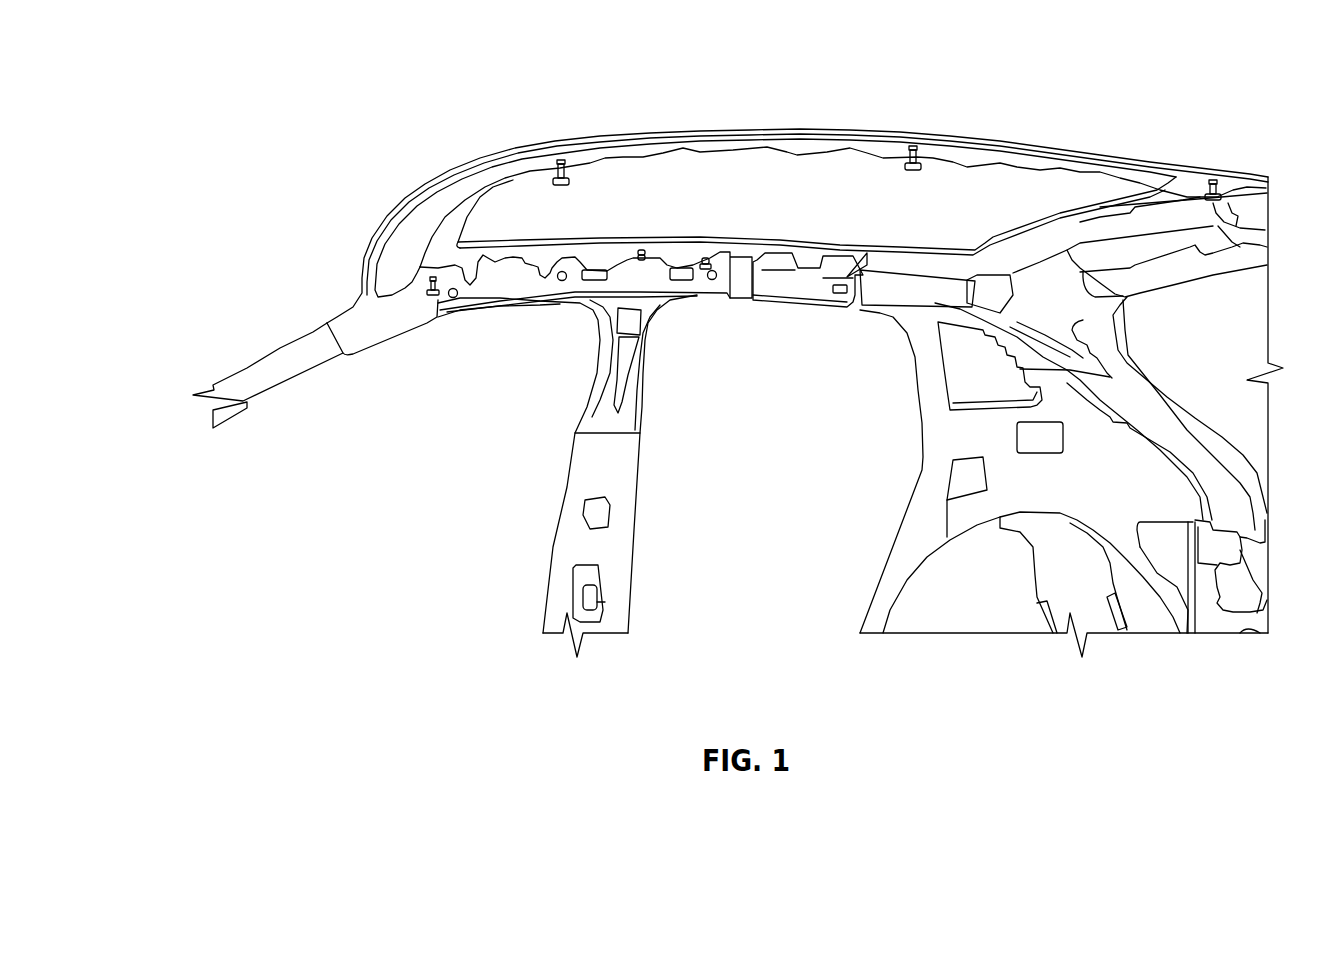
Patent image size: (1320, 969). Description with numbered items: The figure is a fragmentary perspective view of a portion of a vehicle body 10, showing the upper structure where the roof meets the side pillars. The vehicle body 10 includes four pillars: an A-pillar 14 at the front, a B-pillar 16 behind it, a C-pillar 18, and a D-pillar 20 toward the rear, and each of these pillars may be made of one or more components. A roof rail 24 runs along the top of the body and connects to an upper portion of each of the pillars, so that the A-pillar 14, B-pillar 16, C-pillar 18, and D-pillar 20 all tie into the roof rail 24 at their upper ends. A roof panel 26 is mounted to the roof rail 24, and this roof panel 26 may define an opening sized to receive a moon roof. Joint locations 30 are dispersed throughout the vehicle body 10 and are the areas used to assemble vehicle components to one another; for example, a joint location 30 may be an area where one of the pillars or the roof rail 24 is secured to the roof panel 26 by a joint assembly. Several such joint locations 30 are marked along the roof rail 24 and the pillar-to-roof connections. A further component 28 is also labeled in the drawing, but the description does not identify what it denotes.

The vehicle body 10 is at (1172, 80).
The A-pillar 14 is at (313, 327).
The B-pillar 16 is at (642, 248).
The C-pillar 18 is at (912, 285).
The D-pillar 20 is at (1010, 237).
The roof rail 24 is at (740, 300).
The roof panel 26 is at (640, 132).
The headliner edge 28 is at (728, 152).
The joint locations 30 is at (560, 150).